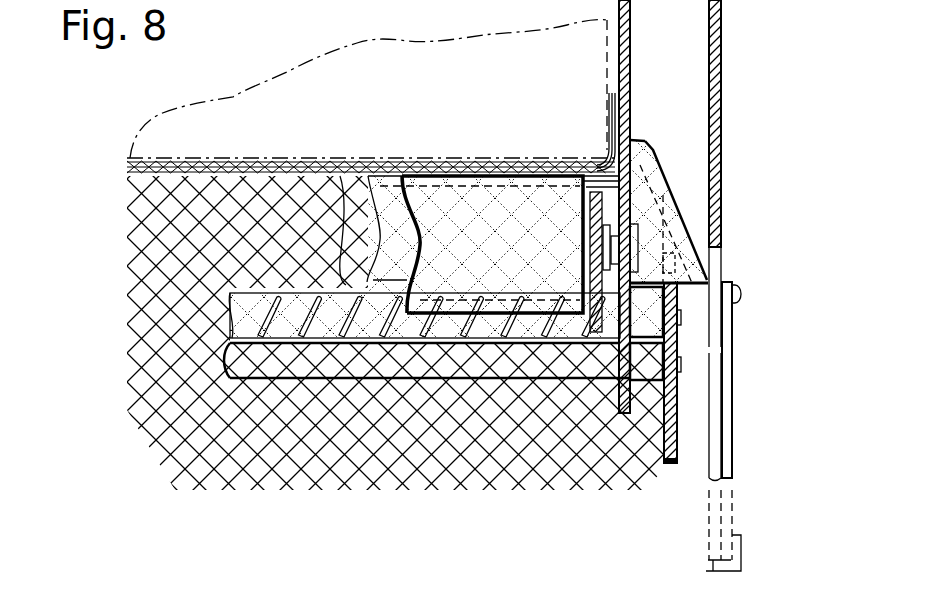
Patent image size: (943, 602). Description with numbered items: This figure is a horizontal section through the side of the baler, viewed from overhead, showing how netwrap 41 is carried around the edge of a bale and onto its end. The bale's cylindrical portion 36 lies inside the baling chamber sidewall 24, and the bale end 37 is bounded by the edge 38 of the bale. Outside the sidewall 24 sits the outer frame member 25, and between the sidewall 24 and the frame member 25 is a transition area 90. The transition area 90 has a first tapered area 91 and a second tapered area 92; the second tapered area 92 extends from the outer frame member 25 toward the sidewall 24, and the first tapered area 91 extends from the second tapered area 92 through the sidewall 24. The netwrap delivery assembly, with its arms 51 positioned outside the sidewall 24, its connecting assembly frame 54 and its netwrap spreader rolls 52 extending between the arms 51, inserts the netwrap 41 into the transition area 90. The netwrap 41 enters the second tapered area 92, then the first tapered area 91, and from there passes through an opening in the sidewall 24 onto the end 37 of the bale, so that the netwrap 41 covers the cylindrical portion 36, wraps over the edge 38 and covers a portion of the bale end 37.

The baling chamber sidewall 24 is at (630, 23).
The outer frame member 25 is at (722, 68).
The cylindrical portion of the bale 36 is at (261, 158).
The end of the bale 37 is at (607, 58).
The edge of the bale 38 is at (605, 160).
The netwrap 41 is at (490, 487).
The arm 51 is at (678, 410).
The netwrap spreader roll 52 is at (250, 277).
The assembly frame 54 is at (650, 133).
The transition area 90 is at (675, 222).
The first tapered area 91 is at (658, 157).
The second tapered area 92 is at (710, 262).